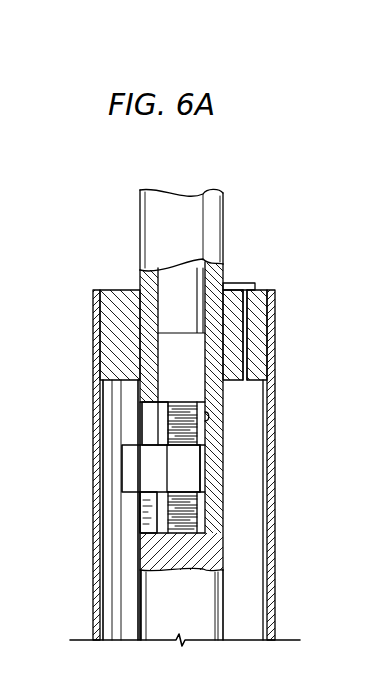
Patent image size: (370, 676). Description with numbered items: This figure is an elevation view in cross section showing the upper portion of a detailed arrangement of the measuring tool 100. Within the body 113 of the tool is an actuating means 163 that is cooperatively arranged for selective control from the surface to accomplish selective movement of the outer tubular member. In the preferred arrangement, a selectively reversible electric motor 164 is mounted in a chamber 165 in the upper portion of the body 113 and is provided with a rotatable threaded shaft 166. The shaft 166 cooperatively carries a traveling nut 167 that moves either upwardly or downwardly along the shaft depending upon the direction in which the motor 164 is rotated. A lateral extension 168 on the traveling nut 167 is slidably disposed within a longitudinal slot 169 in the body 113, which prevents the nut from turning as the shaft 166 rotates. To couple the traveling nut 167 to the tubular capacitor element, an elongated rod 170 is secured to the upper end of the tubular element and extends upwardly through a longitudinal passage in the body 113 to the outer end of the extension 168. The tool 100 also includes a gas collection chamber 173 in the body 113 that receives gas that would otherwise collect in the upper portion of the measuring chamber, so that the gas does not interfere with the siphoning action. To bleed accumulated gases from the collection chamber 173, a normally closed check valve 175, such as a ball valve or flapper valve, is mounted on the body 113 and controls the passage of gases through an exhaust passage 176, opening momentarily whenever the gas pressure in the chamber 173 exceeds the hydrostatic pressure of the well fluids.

The tool 100 is at (299, 441).
The body 113 is at (160, 593).
The actuating means 163 is at (84, 518).
The selectively reversible electric motor 164 is at (172, 360).
The chamber 165 is at (209, 418).
The rotatable threaded shaft 166 is at (197, 514).
The traveling nut 167 is at (190, 474).
The lateral extension 168 is at (140, 465).
The longitudinal slot 169 is at (158, 420).
The elongated rod 170 is at (130, 619).
The gas collection chamber 173 is at (262, 591).
The check valve 175 is at (242, 283).
The exhaust passage 176 is at (249, 318).